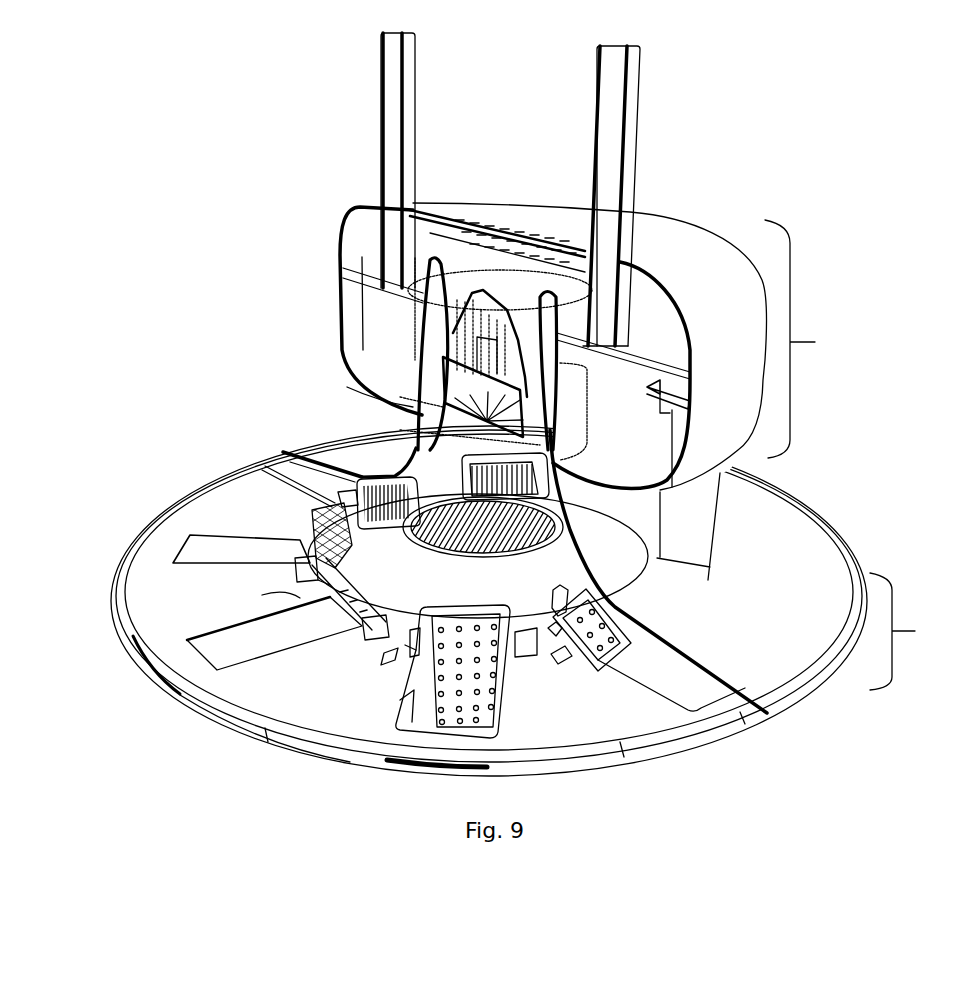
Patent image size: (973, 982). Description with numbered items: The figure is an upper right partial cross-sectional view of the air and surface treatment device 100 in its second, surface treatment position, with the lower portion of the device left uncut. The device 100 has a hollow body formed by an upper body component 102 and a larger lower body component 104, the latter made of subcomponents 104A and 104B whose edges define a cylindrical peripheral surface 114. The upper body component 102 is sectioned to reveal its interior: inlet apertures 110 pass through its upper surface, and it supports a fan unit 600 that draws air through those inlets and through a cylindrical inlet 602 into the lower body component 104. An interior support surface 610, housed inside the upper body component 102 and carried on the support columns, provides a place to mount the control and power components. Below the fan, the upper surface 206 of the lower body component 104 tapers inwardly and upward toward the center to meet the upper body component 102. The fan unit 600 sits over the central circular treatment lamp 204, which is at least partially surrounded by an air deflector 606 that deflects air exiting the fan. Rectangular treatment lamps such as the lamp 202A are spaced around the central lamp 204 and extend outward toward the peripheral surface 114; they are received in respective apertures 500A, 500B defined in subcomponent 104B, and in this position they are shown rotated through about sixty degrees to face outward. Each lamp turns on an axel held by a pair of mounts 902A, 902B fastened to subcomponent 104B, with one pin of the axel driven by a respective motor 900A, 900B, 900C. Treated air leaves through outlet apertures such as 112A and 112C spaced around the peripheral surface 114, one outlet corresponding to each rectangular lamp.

The air and surface treatment device 100 is at (292, 180).
The cylindrical inlet 602 is at (458, 270).
The inlet apertures 110 is at (523, 212).
The fan unit 600 is at (414, 344).
The interior support surface 610 is at (672, 345).
The upper body component 102 is at (612, 346).
The rectangular treatment lamp 202A is at (370, 474).
The outlet aperture 112A is at (283, 452).
The aperture 500A is at (285, 483).
The motor 900A is at (322, 506).
The aperture 500B is at (185, 545).
The motor 900B is at (292, 573).
The upper surface 206 is at (640, 542).
The air deflector 606 is at (445, 587).
The central circular treatment lamp 204 is at (492, 552).
The motor 900C is at (360, 634).
The mount 902A is at (441, 671).
The mount 902B is at (513, 663).
The subcomponent 104A is at (790, 618).
The lower body component 104 is at (541, 601).
The outlet aperture 112C is at (153, 668).
The peripheral surface 114 is at (252, 728).
The subcomponent 104B is at (615, 744).